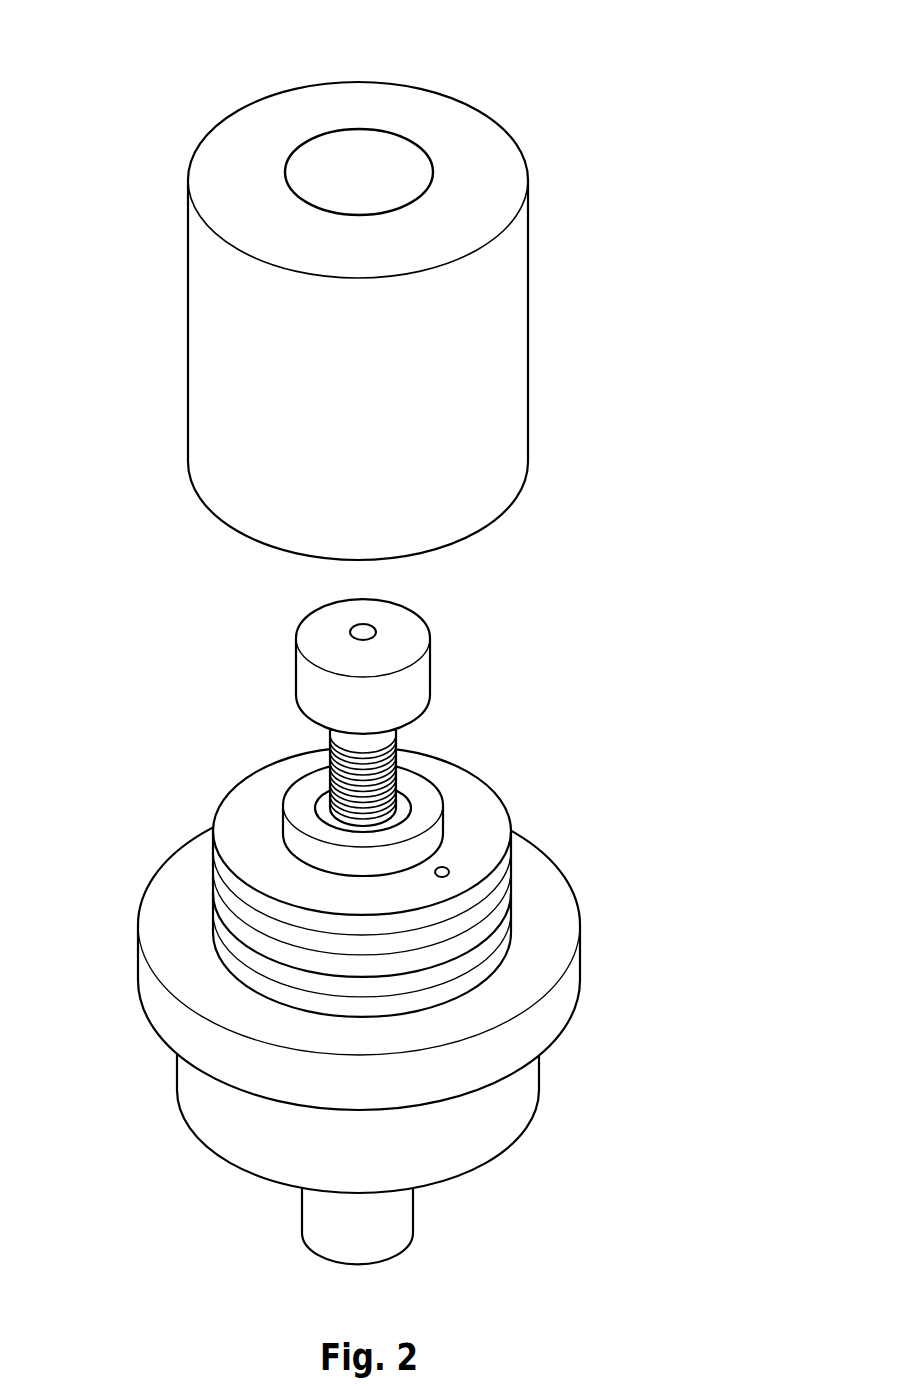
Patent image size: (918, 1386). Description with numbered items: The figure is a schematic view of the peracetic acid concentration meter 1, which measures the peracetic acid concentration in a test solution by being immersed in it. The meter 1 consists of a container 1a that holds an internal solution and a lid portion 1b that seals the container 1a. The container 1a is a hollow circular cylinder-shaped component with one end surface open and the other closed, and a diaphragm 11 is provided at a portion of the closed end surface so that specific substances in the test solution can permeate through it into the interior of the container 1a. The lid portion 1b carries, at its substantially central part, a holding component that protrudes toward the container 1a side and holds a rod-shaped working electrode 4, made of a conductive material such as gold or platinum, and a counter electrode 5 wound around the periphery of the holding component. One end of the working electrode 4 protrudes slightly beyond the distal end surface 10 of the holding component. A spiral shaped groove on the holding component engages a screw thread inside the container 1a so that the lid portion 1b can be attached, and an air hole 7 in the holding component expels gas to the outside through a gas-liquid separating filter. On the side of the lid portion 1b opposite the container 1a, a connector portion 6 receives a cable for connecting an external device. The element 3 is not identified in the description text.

The peracetic acid concentration meter 1 is at (681, 99).
The container 1a is at (146, 131).
The lid portion 1b is at (132, 597).
The diaphragm 11 is at (388, 156).
The distal end surface 10 is at (318, 633).
The working electrode 4 is at (387, 632).
The counter electrode 5 is at (397, 760).
The base body 3 is at (158, 862).
The air hole 7 is at (448, 868).
The connector portion 6 is at (414, 1206).